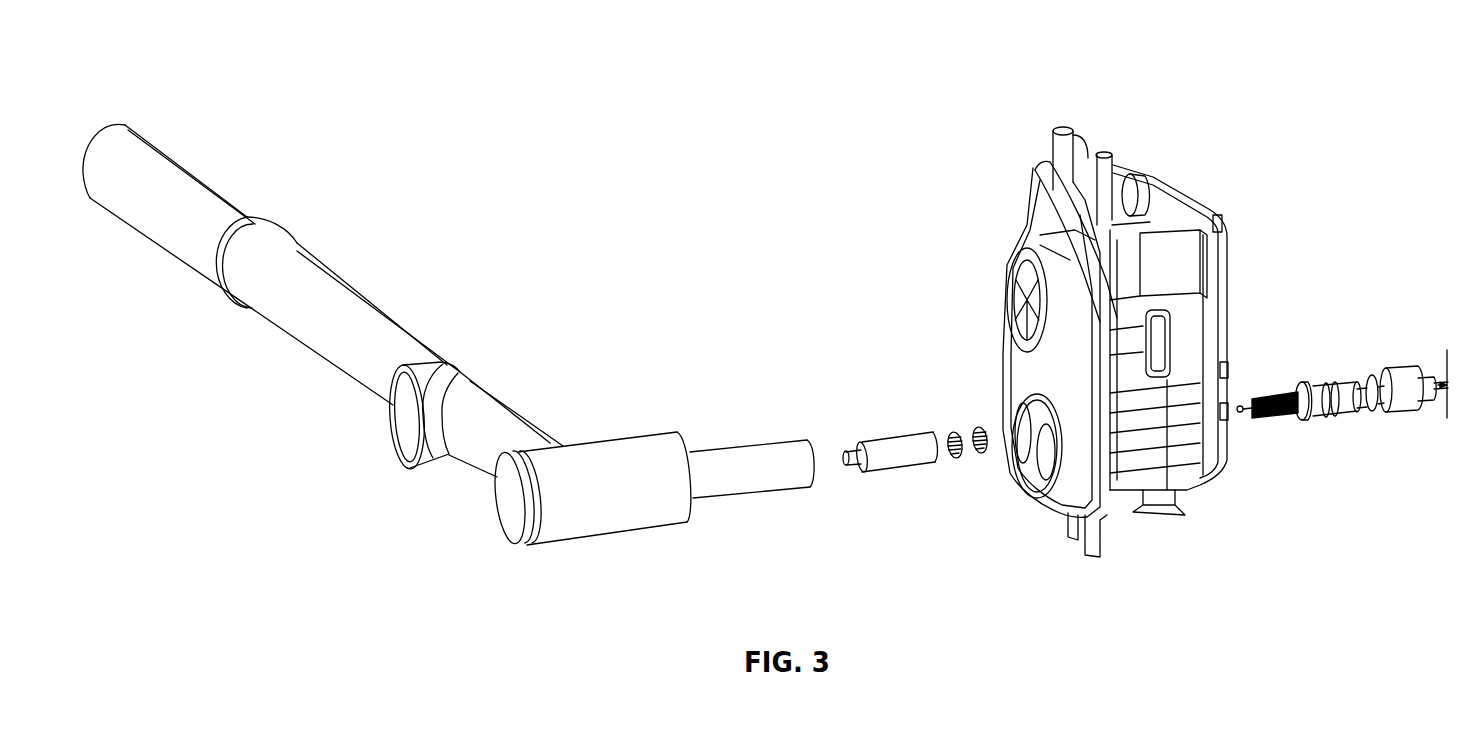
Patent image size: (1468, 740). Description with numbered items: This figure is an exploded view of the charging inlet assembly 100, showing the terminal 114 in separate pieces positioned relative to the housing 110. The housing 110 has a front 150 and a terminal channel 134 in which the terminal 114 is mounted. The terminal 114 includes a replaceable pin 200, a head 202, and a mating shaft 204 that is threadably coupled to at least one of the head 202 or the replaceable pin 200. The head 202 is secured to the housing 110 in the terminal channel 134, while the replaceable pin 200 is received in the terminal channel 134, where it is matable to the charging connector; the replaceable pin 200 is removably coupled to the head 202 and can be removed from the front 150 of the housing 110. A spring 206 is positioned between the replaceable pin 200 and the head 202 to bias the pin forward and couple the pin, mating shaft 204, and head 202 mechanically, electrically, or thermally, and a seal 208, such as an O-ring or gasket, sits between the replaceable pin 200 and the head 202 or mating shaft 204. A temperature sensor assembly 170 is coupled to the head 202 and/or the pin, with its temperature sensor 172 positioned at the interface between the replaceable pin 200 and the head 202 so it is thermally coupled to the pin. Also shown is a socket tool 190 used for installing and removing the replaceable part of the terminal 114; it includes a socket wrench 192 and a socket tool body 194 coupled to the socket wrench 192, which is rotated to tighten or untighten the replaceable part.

The charging inlet assembly 100 is at (806, 104).
The housing 110 is at (1104, 350).
The terminal 114 is at (893, 455).
The terminal channel 134 is at (1018, 450).
The front 150 is at (1043, 498).
The temperature sensor assembly 170 is at (1342, 380).
The temperature sensor 172 is at (1242, 412).
The socket tool 190 is at (448, 377).
The socket wrench 192 is at (557, 522).
The socket tool body 194 is at (728, 478).
The replaceable pin 200 is at (883, 448).
The head 202 is at (1340, 385).
The mating shaft 204 is at (1280, 395).
The spring 206 is at (977, 428).
The seal 208 is at (953, 432).